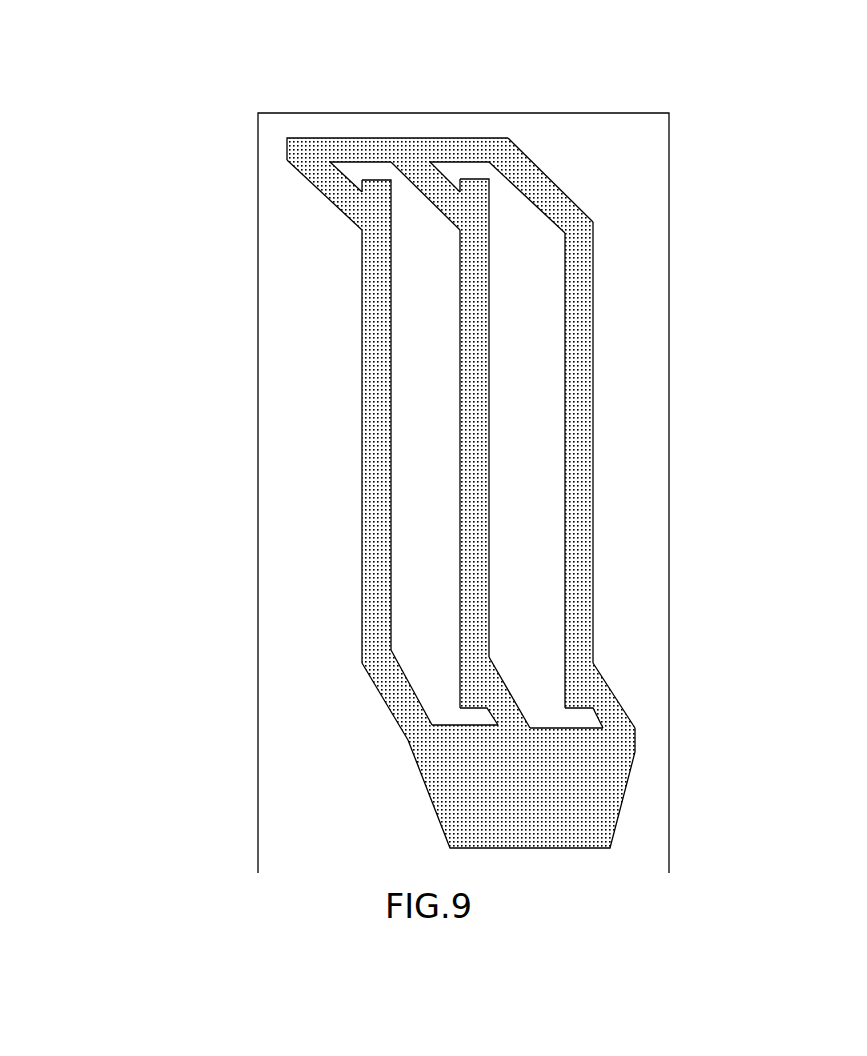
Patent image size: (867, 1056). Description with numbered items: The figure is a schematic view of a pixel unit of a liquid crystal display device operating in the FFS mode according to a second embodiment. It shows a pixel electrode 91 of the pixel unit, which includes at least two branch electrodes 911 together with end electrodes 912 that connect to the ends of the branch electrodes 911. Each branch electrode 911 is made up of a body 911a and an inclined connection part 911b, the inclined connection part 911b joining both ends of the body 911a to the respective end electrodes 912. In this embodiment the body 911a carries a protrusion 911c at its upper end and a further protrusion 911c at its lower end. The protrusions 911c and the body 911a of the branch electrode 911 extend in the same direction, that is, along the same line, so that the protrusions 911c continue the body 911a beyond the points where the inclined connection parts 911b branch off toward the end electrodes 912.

The pixel electrode 91 is at (368, 138).
The branch electrode 911 is at (380, 422).
The body 911a is at (362, 290).
The inclined connection part 911b is at (333, 206).
The protrusion 911c is at (500, 177).
The end electrode 912 is at (460, 138).